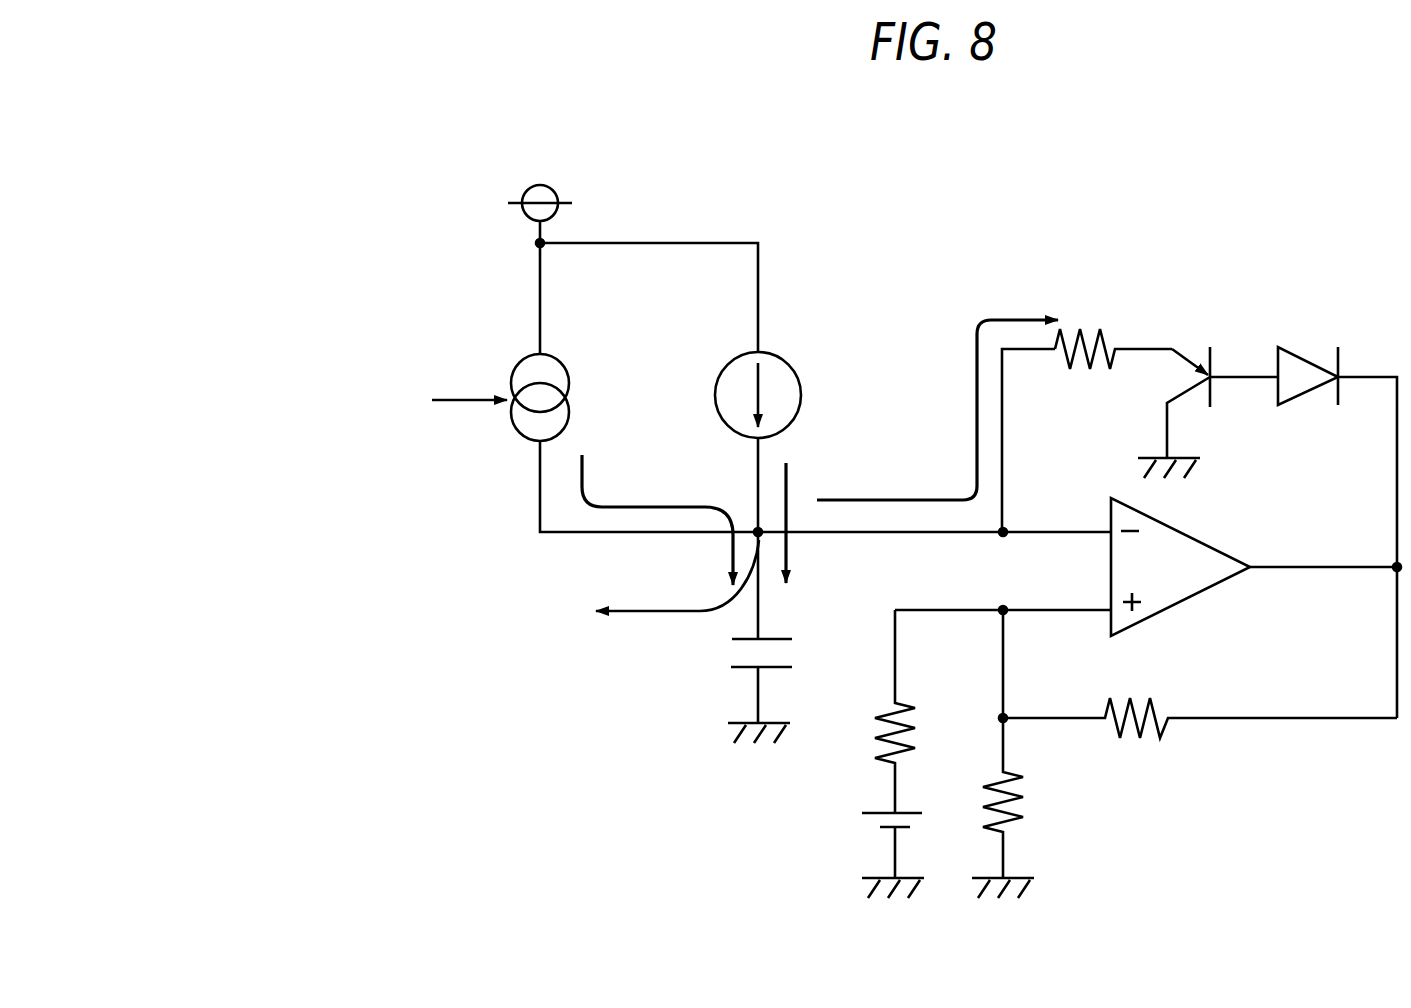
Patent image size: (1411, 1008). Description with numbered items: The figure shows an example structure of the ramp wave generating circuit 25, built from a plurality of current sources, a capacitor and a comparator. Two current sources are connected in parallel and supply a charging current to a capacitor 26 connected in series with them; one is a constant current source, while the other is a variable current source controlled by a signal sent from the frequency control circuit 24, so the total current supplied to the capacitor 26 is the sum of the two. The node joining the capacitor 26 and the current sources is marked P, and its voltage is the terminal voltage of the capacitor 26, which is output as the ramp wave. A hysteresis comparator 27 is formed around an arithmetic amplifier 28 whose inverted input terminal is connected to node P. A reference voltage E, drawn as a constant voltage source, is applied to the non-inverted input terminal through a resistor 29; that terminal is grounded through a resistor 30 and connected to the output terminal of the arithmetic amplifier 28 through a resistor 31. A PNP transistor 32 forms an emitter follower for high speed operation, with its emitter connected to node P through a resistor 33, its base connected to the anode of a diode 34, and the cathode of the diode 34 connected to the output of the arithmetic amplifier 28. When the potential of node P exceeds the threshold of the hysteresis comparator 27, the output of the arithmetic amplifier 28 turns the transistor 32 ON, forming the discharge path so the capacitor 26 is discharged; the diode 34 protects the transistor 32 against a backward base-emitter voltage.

The frequency control circuit 24 is at (292, 409).
The ramp wave generating circuit 25 is at (650, 163).
The capacitor 26 is at (780, 634).
The hysteresis comparator 27 is at (1238, 775).
The arithmetic amplifier 28 is at (1197, 537).
The resistor 29 is at (900, 700).
The resistor 30 is at (1015, 771).
The resistor 31 is at (1133, 700).
The PNP transistor 32 is at (1212, 347).
The resistor 33 is at (1108, 337).
The diode 34 is at (1308, 358).